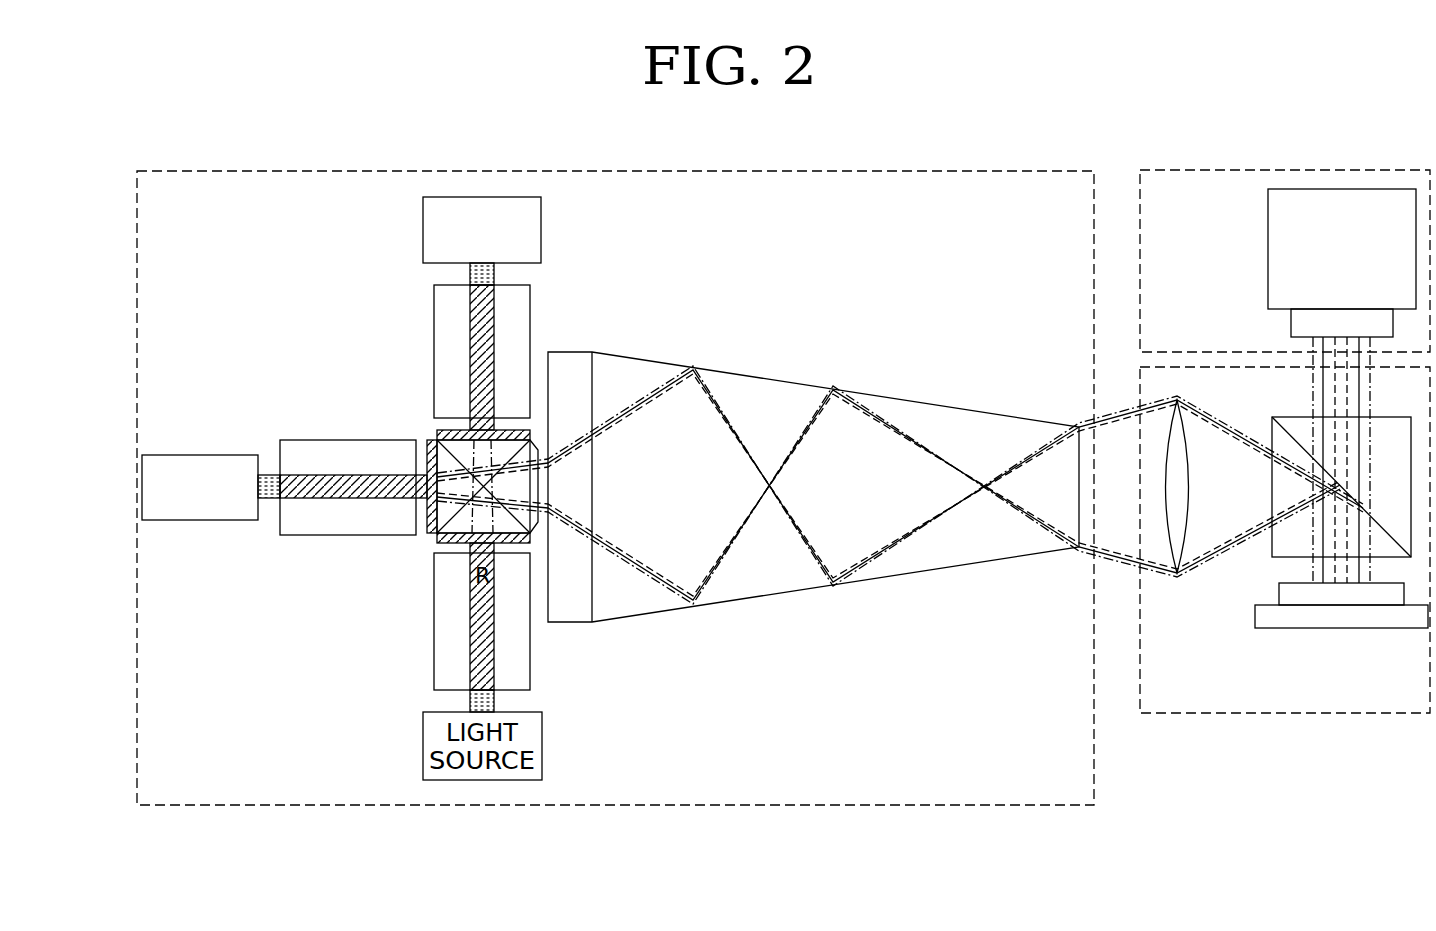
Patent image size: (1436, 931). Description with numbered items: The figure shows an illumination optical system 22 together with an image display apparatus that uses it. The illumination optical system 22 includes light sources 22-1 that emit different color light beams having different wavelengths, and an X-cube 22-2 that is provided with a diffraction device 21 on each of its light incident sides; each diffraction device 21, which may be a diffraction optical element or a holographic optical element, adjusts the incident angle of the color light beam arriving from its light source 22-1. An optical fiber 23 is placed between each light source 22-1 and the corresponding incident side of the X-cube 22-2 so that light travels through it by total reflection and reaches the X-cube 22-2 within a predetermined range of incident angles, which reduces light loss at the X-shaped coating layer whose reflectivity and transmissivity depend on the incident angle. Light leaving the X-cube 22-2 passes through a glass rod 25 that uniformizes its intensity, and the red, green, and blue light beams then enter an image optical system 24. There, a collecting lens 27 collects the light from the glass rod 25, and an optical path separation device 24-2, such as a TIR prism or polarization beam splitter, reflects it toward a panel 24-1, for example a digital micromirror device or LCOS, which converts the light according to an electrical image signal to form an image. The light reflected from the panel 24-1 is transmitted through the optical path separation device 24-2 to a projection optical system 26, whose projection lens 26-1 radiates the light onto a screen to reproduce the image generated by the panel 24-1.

The diffraction device 21 is at (430, 438).
The illumination optical system 22 is at (633, 805).
The light source 22-1 is at (541, 228).
The X-cube 22-2 is at (437, 520).
The optical fiber 23 is at (530, 320).
The image optical system 24 is at (1287, 713).
The panel 24-1 is at (1340, 628).
The optical path separation device 24-2 is at (1292, 417).
The glass rod 25 is at (651, 360).
The projection optical system 26 is at (1288, 170).
The projection lens 26-1 is at (1268, 250).
The collecting lens 27 is at (1195, 487).